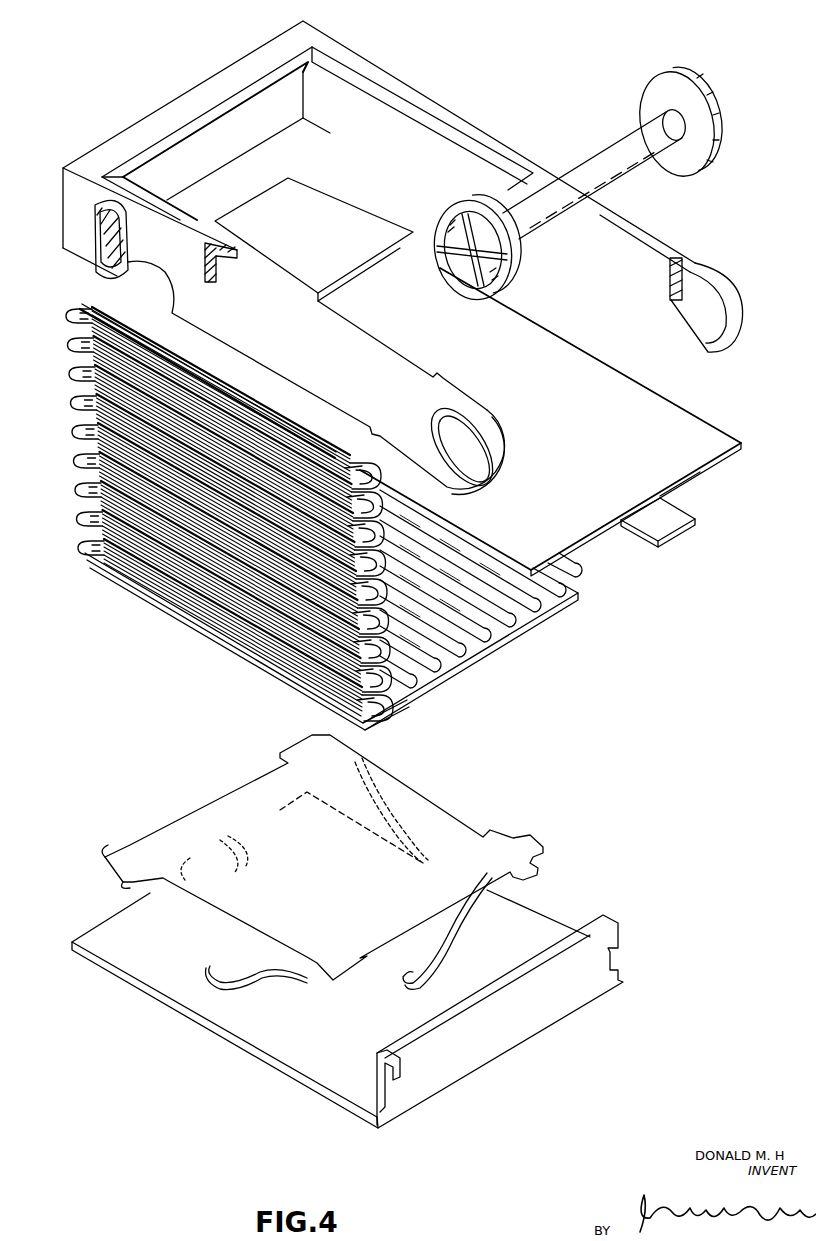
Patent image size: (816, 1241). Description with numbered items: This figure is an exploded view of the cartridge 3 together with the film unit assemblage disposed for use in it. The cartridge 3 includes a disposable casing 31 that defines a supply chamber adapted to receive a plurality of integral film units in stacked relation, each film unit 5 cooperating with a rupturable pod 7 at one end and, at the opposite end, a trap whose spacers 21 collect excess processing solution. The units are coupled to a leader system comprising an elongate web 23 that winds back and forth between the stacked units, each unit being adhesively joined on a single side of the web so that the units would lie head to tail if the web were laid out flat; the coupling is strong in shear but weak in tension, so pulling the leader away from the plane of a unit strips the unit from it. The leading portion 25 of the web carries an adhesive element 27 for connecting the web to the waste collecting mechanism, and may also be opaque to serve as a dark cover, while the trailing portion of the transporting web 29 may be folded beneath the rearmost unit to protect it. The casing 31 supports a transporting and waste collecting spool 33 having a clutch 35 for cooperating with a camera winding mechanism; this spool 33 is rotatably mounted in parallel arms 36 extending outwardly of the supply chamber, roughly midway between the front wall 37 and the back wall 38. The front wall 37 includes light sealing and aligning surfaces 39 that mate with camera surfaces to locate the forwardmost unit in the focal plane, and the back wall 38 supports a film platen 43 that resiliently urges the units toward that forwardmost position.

The cartridge 3 is at (347, 931).
The film unit 5 is at (82, 432).
The pod 7 is at (352, 540).
The spacers 21 is at (80, 318).
The elongate web 23 is at (680, 415).
The leading portion 25 is at (692, 480).
The adhesive element 27 is at (658, 522).
The trailing portion of the transporting web 29 is at (476, 646).
The disposable casing 31 is at (305, 35).
The spool 33 is at (686, 102).
The clutch 35 is at (440, 275).
The parallel arms 36 is at (414, 362).
The front wall 37 is at (398, 80).
The back wall 38 is at (210, 1025).
The light sealing and aligning surfaces 39 is at (432, 126).
The film platen 43 is at (330, 968).